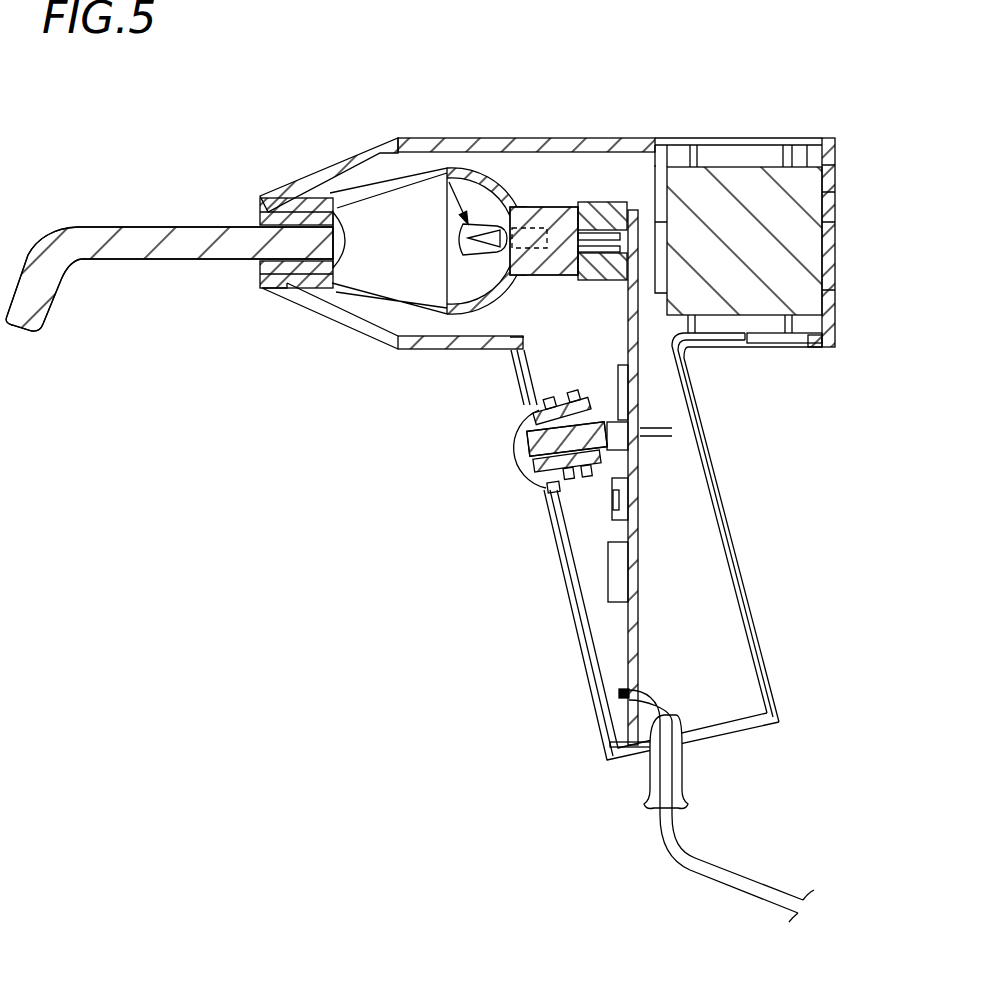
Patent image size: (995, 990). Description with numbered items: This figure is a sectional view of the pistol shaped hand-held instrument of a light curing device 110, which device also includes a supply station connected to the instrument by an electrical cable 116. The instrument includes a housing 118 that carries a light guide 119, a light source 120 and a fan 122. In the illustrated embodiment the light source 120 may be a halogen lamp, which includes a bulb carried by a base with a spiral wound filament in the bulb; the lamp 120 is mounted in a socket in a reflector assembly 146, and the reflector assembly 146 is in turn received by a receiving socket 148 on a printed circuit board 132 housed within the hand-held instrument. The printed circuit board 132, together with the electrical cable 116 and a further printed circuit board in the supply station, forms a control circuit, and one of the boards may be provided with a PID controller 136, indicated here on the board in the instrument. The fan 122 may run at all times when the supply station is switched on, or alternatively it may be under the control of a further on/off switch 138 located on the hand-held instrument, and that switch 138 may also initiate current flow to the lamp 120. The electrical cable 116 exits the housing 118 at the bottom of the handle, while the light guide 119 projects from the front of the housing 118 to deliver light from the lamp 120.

The light curing device 110 is at (389, 572).
The electrical cable 116 is at (708, 877).
The housing 118 is at (557, 147).
The light guide 119 is at (128, 256).
The light source 120 is at (443, 171).
The fan 122 is at (724, 185).
The printed circuit board 132 is at (637, 381).
The PID controller 136 is at (617, 568).
The on/off switch 138 is at (513, 433).
The reflector assembly 146 is at (477, 180).
The receiving socket 148 is at (610, 208).